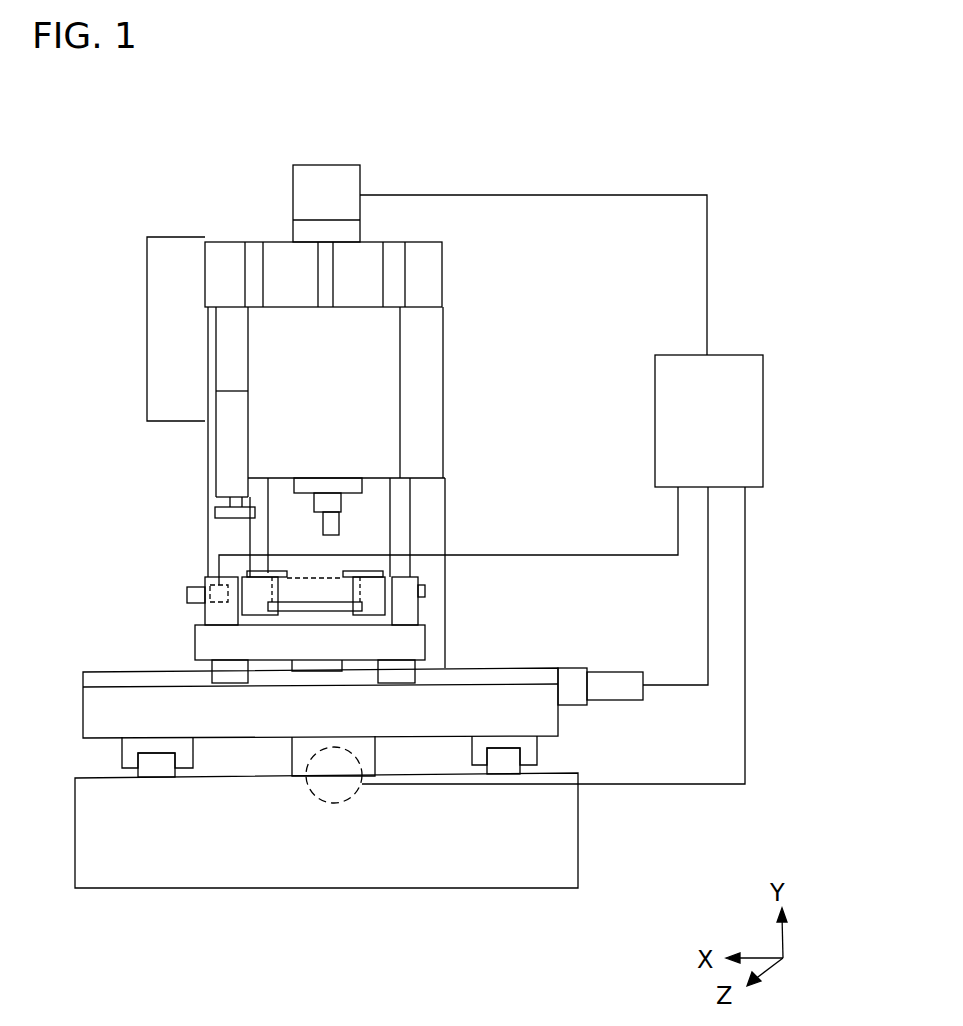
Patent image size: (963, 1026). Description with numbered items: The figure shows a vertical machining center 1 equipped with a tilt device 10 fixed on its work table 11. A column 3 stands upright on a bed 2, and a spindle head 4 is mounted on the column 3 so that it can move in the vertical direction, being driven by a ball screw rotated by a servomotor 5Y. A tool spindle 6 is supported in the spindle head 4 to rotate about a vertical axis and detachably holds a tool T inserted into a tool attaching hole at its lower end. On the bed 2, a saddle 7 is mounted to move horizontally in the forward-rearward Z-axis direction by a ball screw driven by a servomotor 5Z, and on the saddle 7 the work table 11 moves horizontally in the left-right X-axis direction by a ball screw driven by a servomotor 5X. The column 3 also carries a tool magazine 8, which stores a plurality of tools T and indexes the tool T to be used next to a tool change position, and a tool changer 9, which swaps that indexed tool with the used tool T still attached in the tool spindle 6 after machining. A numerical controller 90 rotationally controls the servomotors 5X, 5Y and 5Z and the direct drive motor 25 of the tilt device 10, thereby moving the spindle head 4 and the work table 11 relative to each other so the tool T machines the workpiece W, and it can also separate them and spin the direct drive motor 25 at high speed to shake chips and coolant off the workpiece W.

The vertical machining center 1 is at (178, 172).
The bed 2 is at (565, 833).
The column 3 is at (428, 273).
The spindle head 4 is at (393, 383).
The servomotor 5X is at (628, 700).
The servomotor 5Y is at (345, 185).
The servomotor 5Z is at (333, 803).
The tool spindle 6 is at (362, 485).
The saddle 7 is at (100, 716).
The tool magazine 8 is at (155, 288).
The tool changer 9 is at (215, 512).
The tilt device 10 is at (207, 576).
The work table 11 is at (410, 637).
The direct drive motor 25 is at (215, 603).
The numerical controller 90 is at (755, 417).
The tool T is at (322, 530).
The workpiece W is at (313, 577).